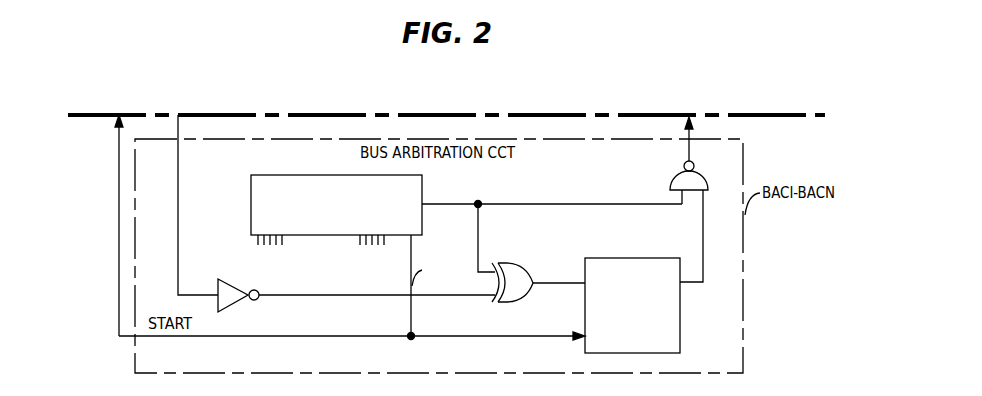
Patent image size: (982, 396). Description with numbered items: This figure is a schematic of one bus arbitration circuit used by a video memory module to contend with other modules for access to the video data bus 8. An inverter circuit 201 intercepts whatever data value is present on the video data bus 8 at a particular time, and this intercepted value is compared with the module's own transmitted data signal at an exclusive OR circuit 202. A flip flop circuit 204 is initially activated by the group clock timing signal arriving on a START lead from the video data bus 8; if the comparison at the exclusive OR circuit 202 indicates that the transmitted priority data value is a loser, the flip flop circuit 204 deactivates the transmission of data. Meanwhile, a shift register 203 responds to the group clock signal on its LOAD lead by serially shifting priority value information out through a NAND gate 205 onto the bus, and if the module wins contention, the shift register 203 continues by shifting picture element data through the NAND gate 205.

The video data bus 8 is at (115, 111).
The inverter circuit 201 is at (220, 281).
The exclusive OR circuit 202 is at (526, 266).
The shift register 203 is at (273, 175).
The flip flop circuit 204 is at (627, 258).
The NAND gate 205 is at (675, 175).